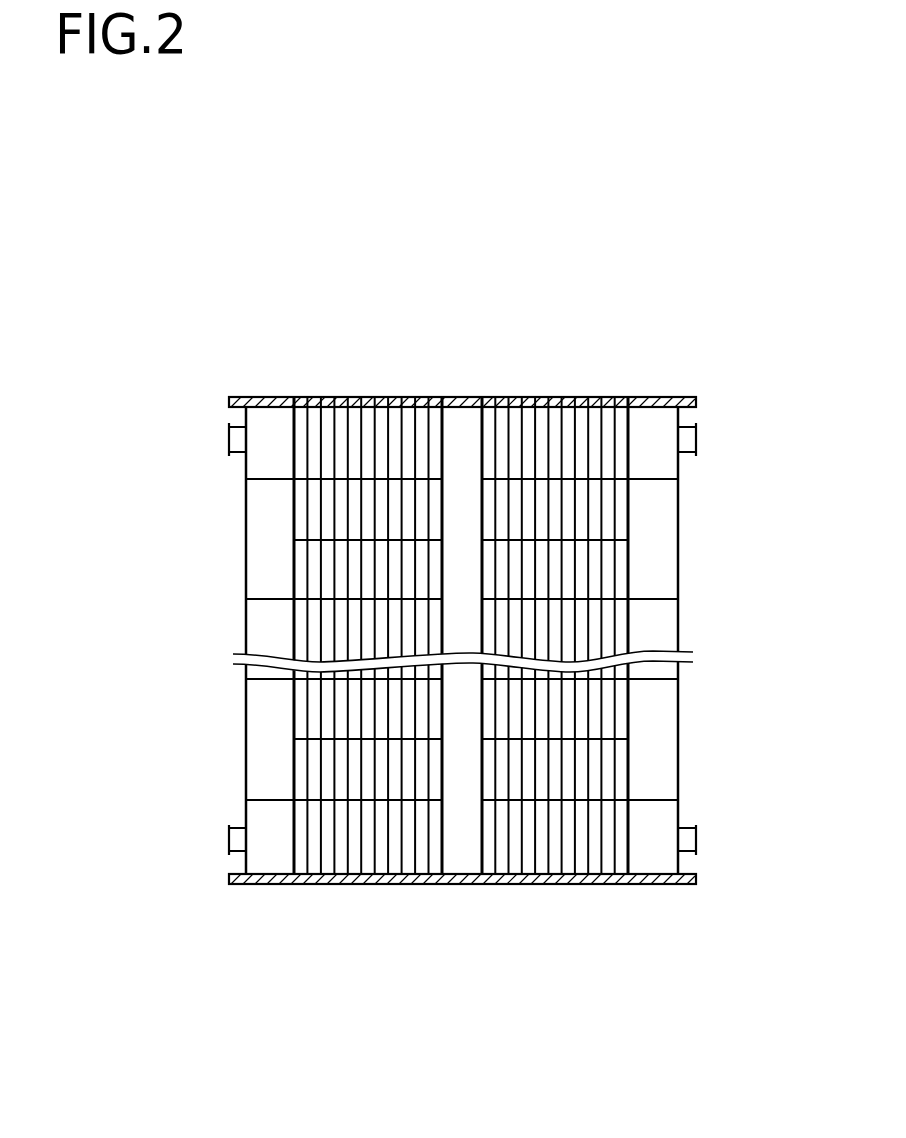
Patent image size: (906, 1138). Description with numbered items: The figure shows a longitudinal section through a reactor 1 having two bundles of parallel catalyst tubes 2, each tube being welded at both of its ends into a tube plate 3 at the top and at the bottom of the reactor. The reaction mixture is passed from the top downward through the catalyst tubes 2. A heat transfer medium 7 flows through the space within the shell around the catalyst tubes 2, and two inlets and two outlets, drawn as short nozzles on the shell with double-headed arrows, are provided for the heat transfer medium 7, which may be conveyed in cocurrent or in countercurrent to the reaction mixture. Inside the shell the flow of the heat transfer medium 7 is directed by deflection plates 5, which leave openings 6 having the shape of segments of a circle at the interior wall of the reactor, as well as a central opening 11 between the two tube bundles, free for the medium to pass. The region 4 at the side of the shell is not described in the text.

The reactor 1 is at (468, 611).
The catalyst tubes 2 is at (620, 432).
The tube plate 3 is at (261, 397).
The side chamber 4 is at (301, 510).
The deflection plates 5 is at (275, 478).
The openings 6 is at (660, 513).
The heat transfer medium 7 is at (210, 446).
The central opening 11 is at (472, 425).